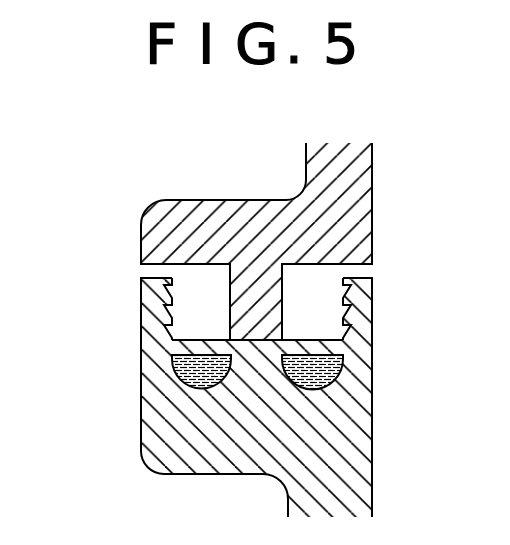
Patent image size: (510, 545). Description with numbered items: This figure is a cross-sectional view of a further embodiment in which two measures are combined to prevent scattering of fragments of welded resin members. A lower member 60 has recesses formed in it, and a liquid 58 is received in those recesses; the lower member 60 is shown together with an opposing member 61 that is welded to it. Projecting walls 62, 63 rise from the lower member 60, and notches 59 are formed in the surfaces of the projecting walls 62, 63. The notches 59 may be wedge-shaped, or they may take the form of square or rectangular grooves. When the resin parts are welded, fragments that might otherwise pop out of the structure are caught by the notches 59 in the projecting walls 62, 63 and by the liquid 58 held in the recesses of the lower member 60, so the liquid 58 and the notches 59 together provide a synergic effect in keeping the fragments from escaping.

The liquid 58 is at (203, 355).
The notches 59 is at (172, 288).
The lower member 60 is at (337, 432).
The upper housing member 61 is at (345, 180).
The projecting wall 62 is at (353, 295).
The projecting wall 63 is at (160, 302).